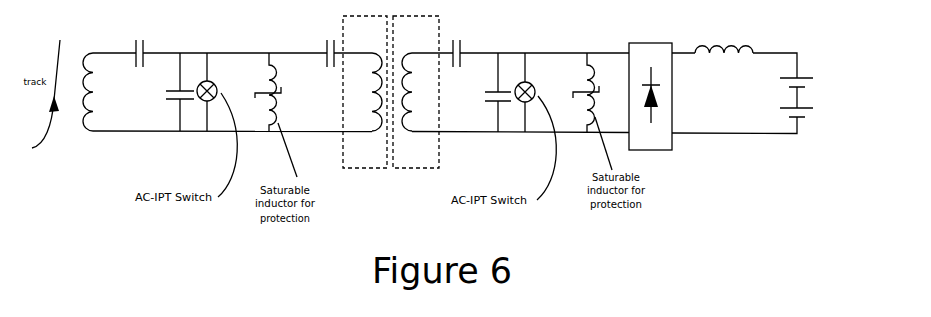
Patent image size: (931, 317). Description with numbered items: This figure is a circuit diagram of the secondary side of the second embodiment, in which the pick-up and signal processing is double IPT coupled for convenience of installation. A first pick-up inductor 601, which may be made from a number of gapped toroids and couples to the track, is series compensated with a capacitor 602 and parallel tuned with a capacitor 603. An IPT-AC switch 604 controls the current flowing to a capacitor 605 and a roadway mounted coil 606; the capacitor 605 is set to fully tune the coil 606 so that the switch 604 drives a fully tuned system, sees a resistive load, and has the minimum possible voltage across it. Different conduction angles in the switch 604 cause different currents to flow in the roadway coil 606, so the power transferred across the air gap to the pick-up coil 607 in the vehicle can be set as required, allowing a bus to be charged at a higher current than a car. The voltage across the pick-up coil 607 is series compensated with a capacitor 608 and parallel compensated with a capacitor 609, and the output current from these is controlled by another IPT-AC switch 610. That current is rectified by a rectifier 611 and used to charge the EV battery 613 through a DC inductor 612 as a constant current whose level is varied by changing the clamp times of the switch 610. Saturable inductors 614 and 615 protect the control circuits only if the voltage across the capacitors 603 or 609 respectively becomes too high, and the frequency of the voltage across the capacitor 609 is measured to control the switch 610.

The first pick-up inductor 601 is at (99, 92).
The capacitor 602 is at (151, 52).
The capacitor 603 is at (165, 92).
The IPT-AC switch 604 is at (214, 92).
The capacitor 605 is at (324, 62).
The roadway mounted coil 606 is at (365, 92).
The pick-up coil 607 is at (418, 92).
The capacitor 608 is at (468, 49).
The capacitor 609 is at (490, 92).
The IPT-AC switch 610 is at (533, 92).
The rectifier 611 is at (650, 89).
The DC inductor 612 is at (724, 40).
The EV battery 613 is at (814, 92).
The saturable inductor 614 is at (281, 92).
The saturable inductor 615 is at (596, 92).